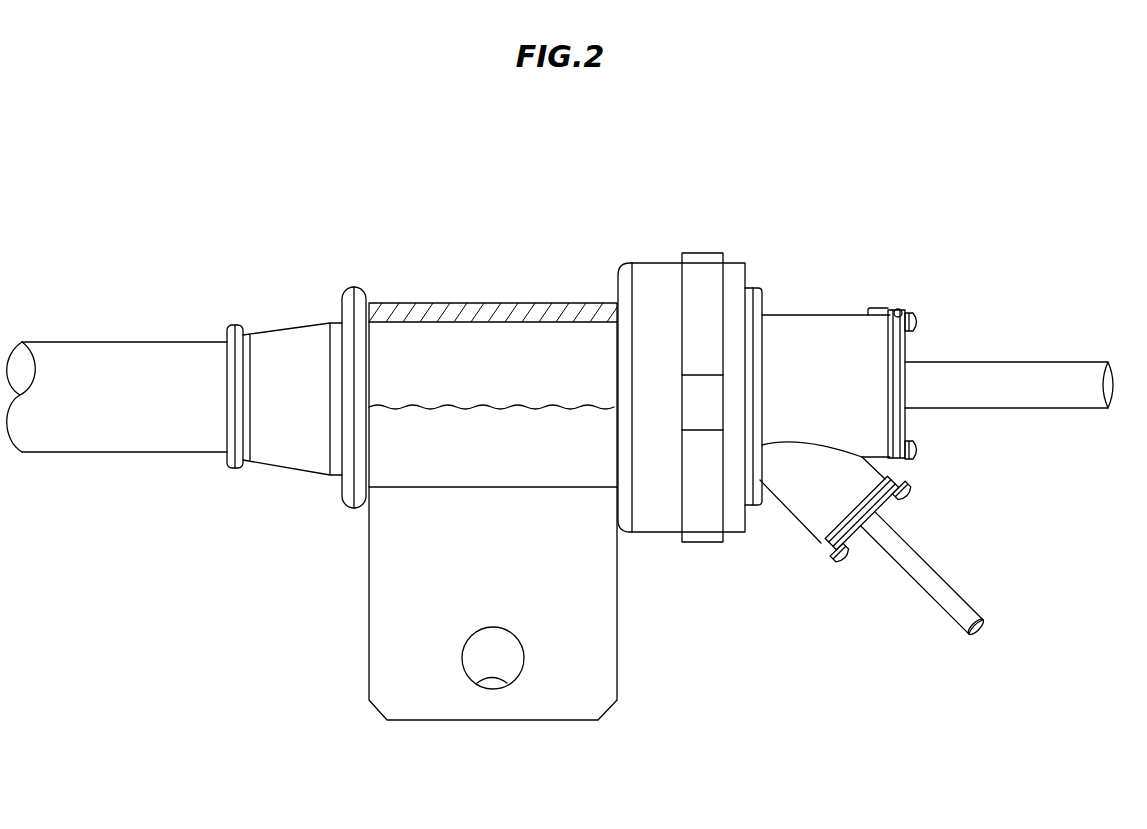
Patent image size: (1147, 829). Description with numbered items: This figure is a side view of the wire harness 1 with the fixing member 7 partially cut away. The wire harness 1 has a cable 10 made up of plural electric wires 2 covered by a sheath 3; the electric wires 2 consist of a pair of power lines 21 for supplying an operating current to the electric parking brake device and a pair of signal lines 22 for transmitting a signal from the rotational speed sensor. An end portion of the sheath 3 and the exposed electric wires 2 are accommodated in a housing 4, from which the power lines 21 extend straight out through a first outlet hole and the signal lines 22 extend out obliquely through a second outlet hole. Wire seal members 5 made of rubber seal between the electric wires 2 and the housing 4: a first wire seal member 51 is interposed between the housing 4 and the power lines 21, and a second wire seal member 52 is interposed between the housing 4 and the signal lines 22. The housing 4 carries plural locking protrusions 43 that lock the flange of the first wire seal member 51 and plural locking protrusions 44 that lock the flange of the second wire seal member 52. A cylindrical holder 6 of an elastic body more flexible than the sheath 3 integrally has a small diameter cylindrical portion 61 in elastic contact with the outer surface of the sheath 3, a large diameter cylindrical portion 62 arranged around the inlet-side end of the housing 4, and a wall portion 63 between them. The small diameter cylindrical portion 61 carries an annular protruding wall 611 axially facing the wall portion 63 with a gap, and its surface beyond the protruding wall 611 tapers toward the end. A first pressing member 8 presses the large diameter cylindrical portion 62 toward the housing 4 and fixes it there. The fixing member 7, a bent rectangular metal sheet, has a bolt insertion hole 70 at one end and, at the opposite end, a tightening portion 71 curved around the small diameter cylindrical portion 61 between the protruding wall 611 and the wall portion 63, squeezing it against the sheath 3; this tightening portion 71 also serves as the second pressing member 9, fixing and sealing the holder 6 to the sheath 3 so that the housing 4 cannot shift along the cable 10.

The wire harness 1 is at (806, 140).
The electric wires 2 is at (1101, 333).
The power lines 21 is at (1045, 360).
The signal lines 22 is at (955, 598).
The sheath 3 is at (97, 342).
The cable 10 is at (69, 471).
The housing 4 is at (852, 300).
The locking protrusions 43 is at (912, 318).
The locking protrusions 44 is at (910, 501).
The wire seal members 5 is at (945, 308).
The first wire seal member 51 is at (906, 350).
The second wire seal member 52 is at (853, 544).
The holder 6 is at (766, 240).
The small diameter cylindrical portion 61 is at (520, 340).
The protruding wall 611 is at (348, 290).
The large diameter cylindrical portion 62 is at (653, 268).
The wall portion 63 is at (620, 290).
The fixing member 7 is at (452, 302).
The tightening portion 71 is at (490, 302).
The first pressing member 8 is at (703, 258).
The second pressing member 9 is at (422, 301).
The bolt insertion hole 70 is at (480, 680).